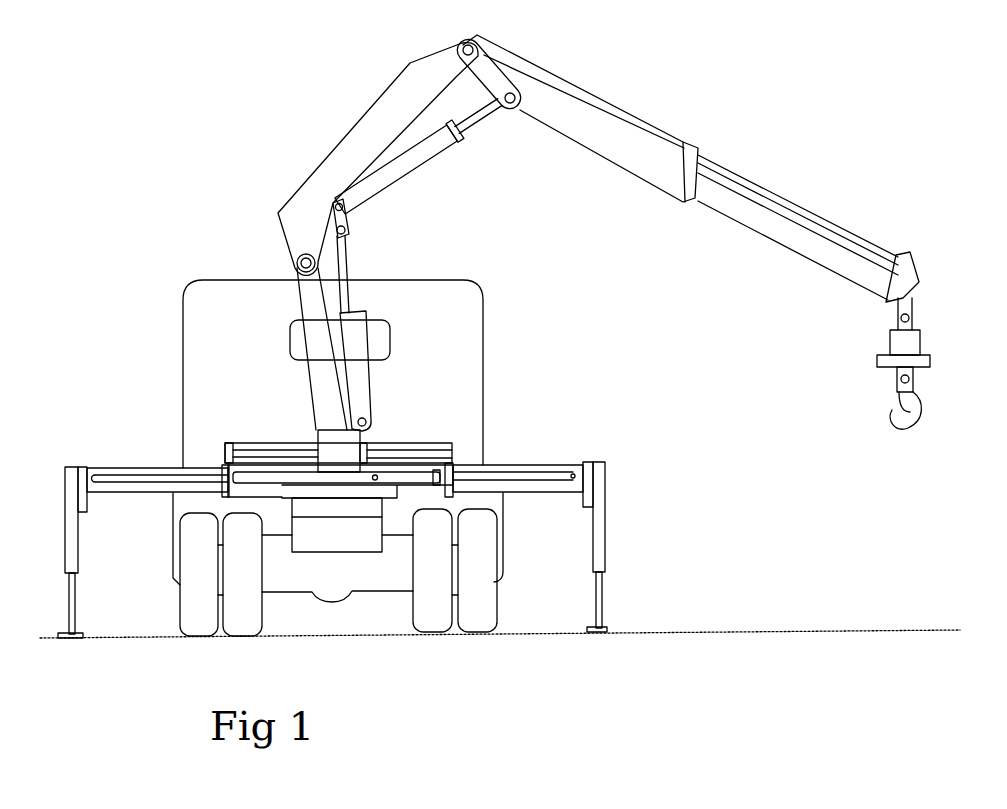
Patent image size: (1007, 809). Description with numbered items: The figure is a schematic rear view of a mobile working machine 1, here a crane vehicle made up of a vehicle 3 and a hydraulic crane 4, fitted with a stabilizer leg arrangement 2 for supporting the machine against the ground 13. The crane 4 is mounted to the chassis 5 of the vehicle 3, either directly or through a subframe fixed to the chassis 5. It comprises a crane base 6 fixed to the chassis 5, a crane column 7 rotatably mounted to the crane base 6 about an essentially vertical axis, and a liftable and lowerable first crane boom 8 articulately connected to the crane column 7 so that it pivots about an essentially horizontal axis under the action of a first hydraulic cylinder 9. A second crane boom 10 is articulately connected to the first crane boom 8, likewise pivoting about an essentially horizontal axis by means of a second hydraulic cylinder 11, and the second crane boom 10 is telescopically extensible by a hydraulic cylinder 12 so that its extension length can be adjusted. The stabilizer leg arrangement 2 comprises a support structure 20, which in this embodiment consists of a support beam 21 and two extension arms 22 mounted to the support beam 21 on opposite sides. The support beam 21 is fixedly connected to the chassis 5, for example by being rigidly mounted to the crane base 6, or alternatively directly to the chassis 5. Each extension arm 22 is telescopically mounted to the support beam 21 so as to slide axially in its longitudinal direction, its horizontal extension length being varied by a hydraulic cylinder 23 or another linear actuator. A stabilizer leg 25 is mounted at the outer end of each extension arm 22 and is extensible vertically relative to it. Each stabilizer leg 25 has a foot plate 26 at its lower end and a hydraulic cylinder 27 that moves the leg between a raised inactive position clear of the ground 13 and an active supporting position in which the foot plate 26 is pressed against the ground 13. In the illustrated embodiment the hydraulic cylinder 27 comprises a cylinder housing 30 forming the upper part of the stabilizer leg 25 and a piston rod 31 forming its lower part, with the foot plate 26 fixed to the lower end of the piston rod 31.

The mobile working machine 1 is at (190, 220).
The stabilizer leg arrangement 2 is at (566, 420).
The vehicle 3 is at (495, 332).
The hydraulic crane 4 is at (300, 128).
The chassis 5 is at (494, 501).
The crane base 6 is at (316, 436).
The crane column 7 is at (313, 378).
The first crane boom 8 is at (338, 160).
The first hydraulic cylinder 9 is at (355, 378).
The second crane boom 10 is at (625, 160).
The second hydraulic cylinder 11 is at (393, 180).
The hydraulic cylinder 12 is at (637, 120).
The ground 13 is at (763, 630).
The support structure 20 is at (161, 456).
The support beam 21 is at (265, 499).
The extension arm 22 is at (122, 469).
The hydraulic cylinder 23 is at (258, 480).
The stabilizer leg 25 is at (69, 458).
The foot plate 26 is at (71, 640).
The hydraulic cylinder 27 is at (86, 531).
The cylinder housing 30 is at (77, 561).
The piston rod 31 is at (78, 612).